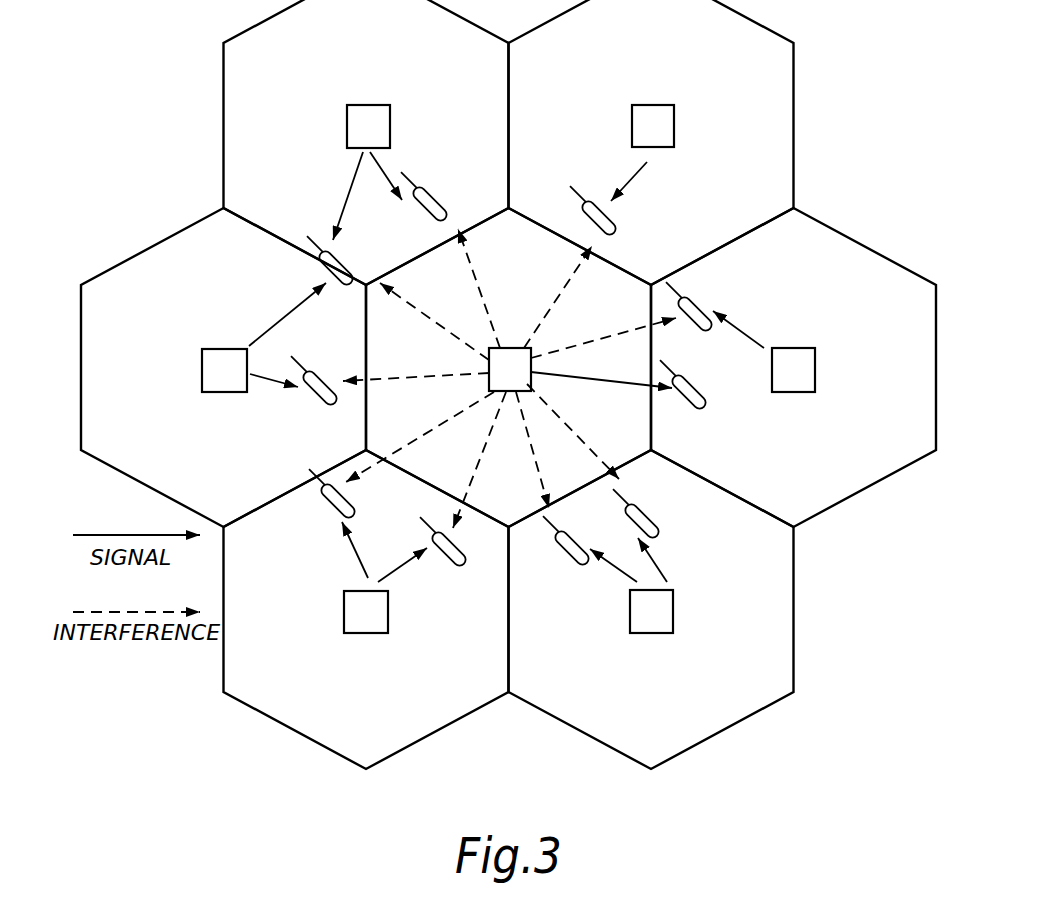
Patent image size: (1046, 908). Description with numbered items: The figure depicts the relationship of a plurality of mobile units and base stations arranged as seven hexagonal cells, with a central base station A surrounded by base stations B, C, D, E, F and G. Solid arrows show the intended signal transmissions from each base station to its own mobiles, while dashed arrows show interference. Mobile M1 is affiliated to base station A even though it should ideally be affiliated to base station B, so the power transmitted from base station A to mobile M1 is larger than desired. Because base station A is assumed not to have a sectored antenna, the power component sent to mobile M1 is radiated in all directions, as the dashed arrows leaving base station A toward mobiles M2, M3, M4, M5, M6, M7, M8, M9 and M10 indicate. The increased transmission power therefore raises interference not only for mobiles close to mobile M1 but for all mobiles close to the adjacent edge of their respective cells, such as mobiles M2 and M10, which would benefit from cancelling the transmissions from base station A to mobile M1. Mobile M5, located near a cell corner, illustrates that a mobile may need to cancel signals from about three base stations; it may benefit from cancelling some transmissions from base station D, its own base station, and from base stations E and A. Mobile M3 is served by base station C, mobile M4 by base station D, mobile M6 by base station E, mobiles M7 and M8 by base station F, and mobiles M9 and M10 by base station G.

The base station A is at (510, 369).
The base station B is at (793, 370).
The base station C is at (653, 126).
The base station D is at (368, 126).
The base station E is at (224, 370).
The base station F is at (366, 612).
The base station G is at (651, 611).
The mobile M1 is at (696, 384).
The mobile M2 is at (695, 306).
The mobile M3 is at (610, 210).
The mobile M4 is at (437, 196).
The mobile M5 is at (339, 260).
The mobile M6 is at (312, 385).
The mobile M7 is at (323, 497).
The mobile M8 is at (441, 549).
The mobile M9 is at (562, 544).
The mobile M10 is at (648, 511).